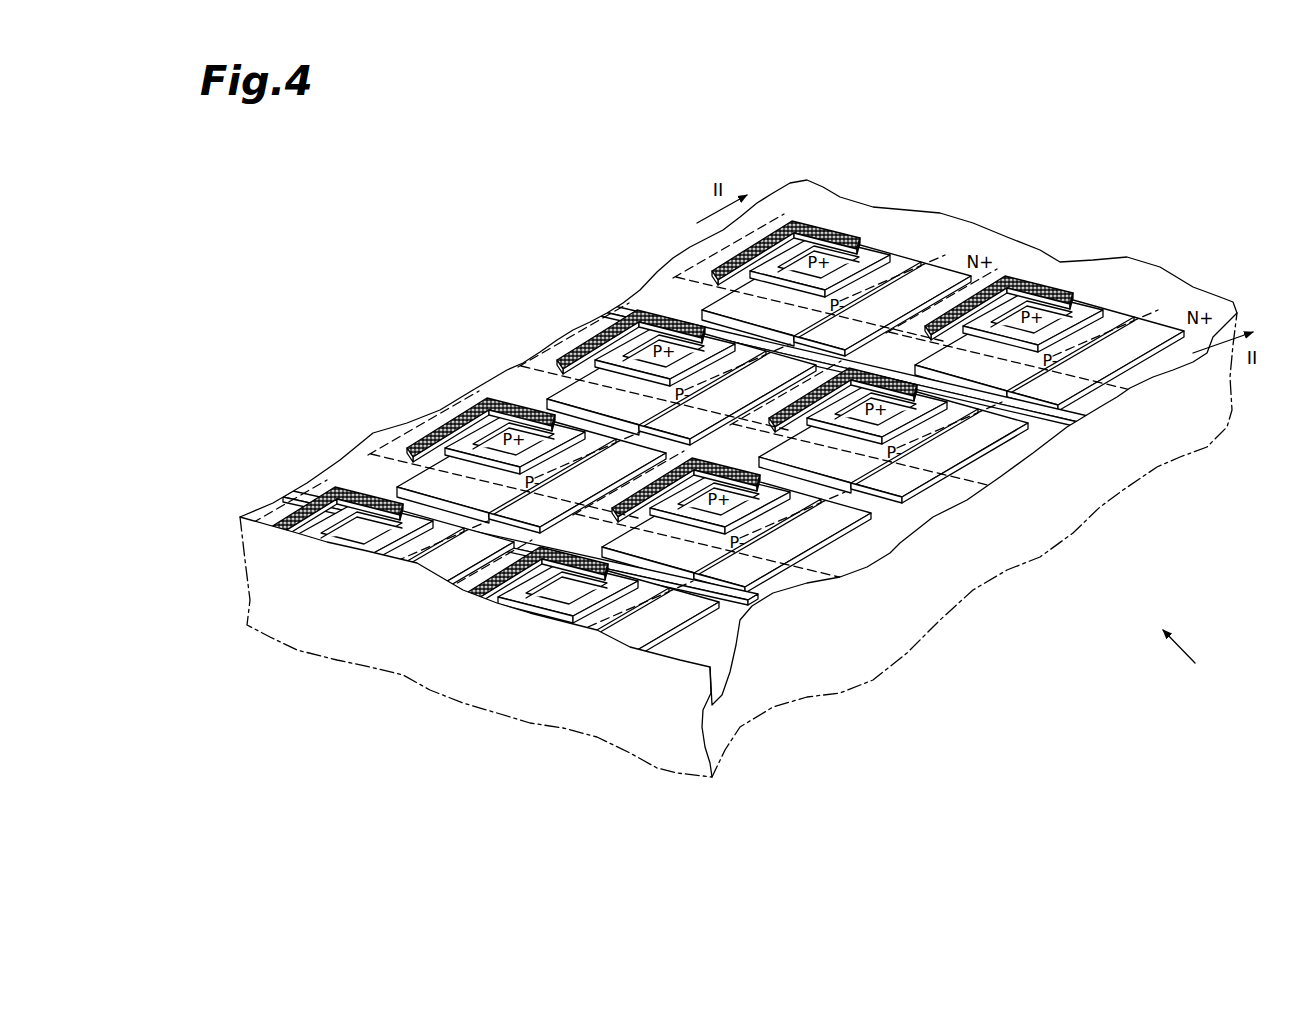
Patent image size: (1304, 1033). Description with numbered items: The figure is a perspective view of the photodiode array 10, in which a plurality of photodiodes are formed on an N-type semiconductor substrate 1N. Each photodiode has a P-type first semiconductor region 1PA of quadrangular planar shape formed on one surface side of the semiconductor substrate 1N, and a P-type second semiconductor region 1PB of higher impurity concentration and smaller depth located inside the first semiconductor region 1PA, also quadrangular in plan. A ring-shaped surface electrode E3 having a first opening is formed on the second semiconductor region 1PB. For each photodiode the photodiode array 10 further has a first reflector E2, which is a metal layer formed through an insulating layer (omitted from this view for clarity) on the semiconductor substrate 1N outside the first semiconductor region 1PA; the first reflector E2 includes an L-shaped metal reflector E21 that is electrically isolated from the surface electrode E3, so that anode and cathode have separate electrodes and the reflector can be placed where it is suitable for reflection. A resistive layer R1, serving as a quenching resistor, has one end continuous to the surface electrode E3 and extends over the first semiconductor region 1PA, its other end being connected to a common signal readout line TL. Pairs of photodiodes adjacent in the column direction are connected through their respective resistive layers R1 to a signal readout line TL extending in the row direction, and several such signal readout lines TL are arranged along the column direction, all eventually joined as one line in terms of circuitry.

The semiconductor substrate 1N is at (807, 190).
The first semiconductor region 1PA is at (1157, 298).
The second semiconductor region 1PB is at (813, 260).
The first reflector E2 is at (950, 272).
The reflector E21 is at (900, 293).
The surface electrode E3 is at (865, 250).
The resistive layer R1 is at (822, 220).
The signal readout line TL is at (1066, 417).
The photodiode array 10 is at (1198, 684).